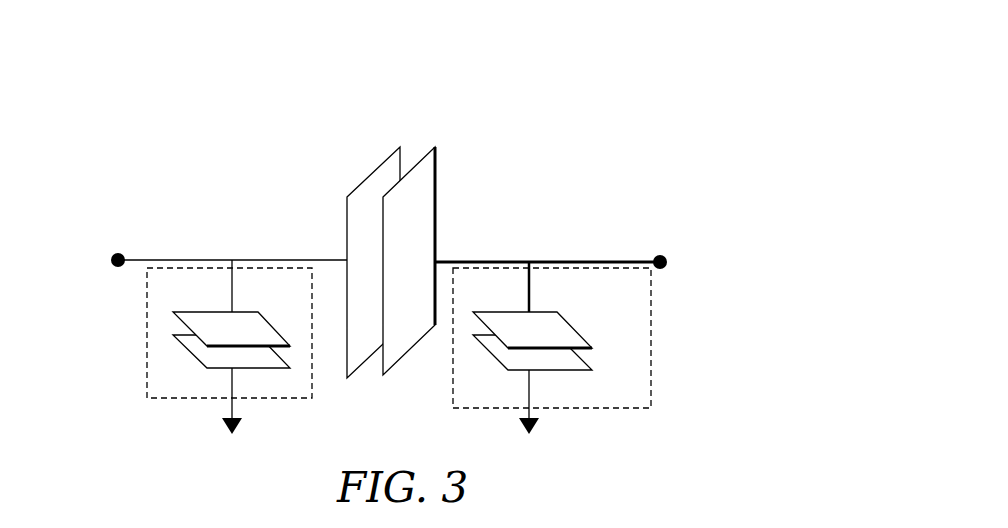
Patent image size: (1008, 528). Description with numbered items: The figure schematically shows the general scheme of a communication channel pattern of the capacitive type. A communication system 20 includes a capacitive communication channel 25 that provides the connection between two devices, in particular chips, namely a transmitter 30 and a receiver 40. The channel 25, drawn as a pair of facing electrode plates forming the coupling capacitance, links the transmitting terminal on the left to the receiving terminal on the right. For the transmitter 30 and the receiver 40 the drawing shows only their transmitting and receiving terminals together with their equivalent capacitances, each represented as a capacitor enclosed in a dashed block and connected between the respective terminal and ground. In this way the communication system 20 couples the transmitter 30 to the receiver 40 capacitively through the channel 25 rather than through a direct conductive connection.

The communication system 20 is at (620, 176).
The capacitive communication channel 25 is at (404, 138).
The transmitter 30 is at (158, 303).
The receiver 40 is at (627, 327).